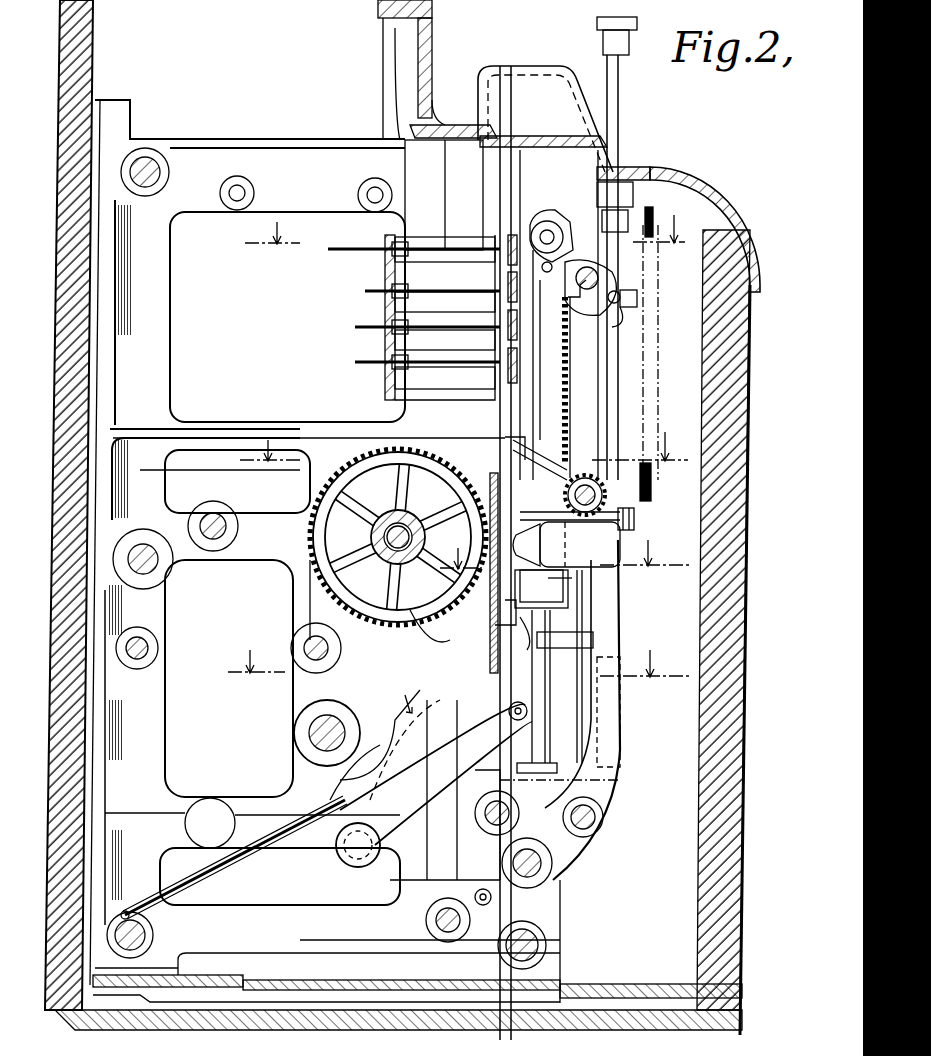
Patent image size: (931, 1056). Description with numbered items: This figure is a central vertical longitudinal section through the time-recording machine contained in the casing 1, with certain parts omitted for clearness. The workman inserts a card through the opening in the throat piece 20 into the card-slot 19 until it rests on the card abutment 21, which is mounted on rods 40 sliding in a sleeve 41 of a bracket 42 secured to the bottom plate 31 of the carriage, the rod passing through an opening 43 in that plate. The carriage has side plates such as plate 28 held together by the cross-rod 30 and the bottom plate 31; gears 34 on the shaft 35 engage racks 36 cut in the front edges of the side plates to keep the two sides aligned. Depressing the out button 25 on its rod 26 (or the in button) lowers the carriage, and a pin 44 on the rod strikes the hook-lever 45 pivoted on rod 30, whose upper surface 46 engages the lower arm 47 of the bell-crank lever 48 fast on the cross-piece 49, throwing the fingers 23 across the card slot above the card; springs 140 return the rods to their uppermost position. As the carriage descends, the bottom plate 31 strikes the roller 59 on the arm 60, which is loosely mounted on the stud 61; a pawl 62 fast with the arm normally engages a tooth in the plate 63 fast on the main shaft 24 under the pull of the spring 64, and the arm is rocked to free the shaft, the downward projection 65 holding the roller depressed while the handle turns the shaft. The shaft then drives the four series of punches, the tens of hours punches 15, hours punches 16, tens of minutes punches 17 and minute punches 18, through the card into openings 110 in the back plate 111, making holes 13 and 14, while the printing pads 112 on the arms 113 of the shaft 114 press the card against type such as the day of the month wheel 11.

The casing 1 is at (80, 52).
The day of the month wheel 11 is at (475, 244).
The holes 13 is at (464, 462).
The holes 14 is at (565, 567).
The tens of hours series of punches 15 is at (348, 240).
The hours punches 16 is at (365, 291).
The tens of minutes punches 17 is at (355, 327).
The digits of minutes punches 18 is at (355, 362).
The card-slot 19 is at (500, 203).
The throat piece 20 is at (506, 70).
The card abutment 21 is at (505, 452).
The fingers 23 is at (560, 85).
The main shaft 24 is at (300, 738).
The out button 25 is at (600, 23).
The rod 26 is at (620, 118).
The side plate 28 is at (560, 395).
The rod 30 is at (582, 304).
The bottom plate 31 is at (577, 620).
The gears 34 is at (595, 483).
The shaft 35 is at (635, 520).
The racks 36 is at (565, 430).
The rods 40 is at (490, 605).
The sleeve 41 is at (490, 482).
The bracket 42 is at (512, 506).
The opening 43 is at (512, 632).
The pin 44 is at (625, 295).
The hook-lever 45 is at (612, 305).
The upper surface 46 is at (612, 214).
The lower arm 47 is at (567, 241).
The bell-crank lever 48 is at (506, 222).
The cross-piece 49 is at (633, 190).
The roller 59 is at (527, 711).
The arm 60 is at (440, 745).
The stud 61 is at (353, 860).
The pawl 62 is at (406, 750).
The plate 63 is at (388, 700).
The spring 64 is at (247, 858).
The downward projection 65 is at (560, 642).
The openings 110 is at (520, 362).
The back plate 111 is at (555, 340).
The printing pads 112 is at (560, 572).
The arms 113 is at (610, 735).
The shaft 114 is at (545, 867).
The springs 140 is at (592, 268).